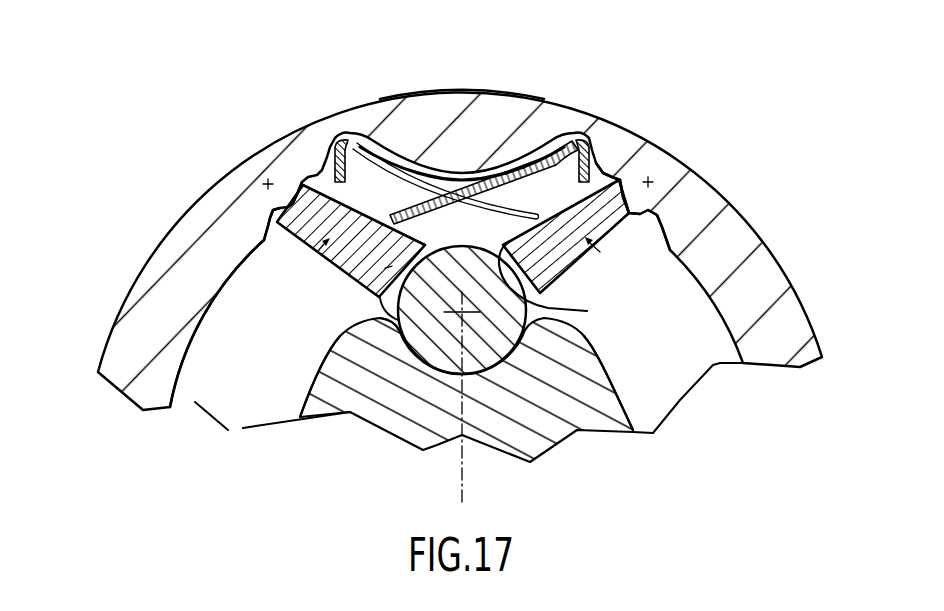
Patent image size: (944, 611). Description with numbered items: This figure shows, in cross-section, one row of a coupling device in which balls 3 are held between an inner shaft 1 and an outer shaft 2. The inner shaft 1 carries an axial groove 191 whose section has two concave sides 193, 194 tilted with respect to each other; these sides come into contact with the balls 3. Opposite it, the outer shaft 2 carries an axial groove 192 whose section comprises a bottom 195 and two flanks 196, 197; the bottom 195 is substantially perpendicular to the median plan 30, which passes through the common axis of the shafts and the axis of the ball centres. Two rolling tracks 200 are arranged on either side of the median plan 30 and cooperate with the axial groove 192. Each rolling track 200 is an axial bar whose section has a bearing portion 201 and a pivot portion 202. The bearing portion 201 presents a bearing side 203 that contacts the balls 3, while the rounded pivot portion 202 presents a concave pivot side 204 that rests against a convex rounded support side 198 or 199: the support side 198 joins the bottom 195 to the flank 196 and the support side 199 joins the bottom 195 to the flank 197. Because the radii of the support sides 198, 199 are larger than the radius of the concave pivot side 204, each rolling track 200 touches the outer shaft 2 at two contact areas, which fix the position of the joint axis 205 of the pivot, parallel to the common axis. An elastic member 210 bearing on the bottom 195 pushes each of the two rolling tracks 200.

The inner shaft 1 is at (592, 395).
The outer shaft 2 is at (760, 280).
The balls 3 is at (445, 345).
The median plan 30 is at (463, 480).
The axial groove 191 is at (415, 374).
The axial groove 192 is at (447, 163).
The concave side 193 is at (368, 365).
The concave side 194 is at (547, 392).
The bottom 195 is at (507, 178).
The flank 196 is at (268, 218).
The flank 197 is at (668, 212).
The convex rounded support side 198 is at (288, 197).
The convex rounded support side 199 is at (640, 207).
The rolling tracks 200 is at (312, 250).
The bearing portion 201 is at (375, 283).
The pivot portion 202 is at (266, 243).
The bearing side 203 is at (565, 300).
The concave pivot side 204 is at (632, 216).
The joint axis 205 is at (265, 181).
The elastic member 210 is at (386, 150).